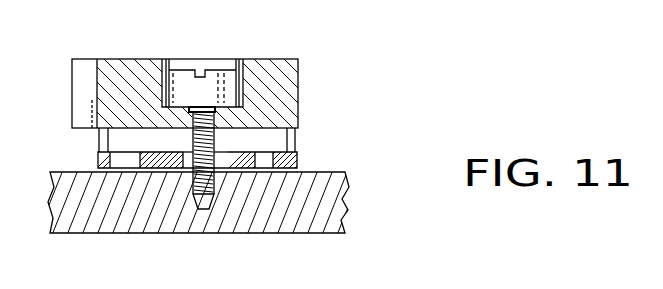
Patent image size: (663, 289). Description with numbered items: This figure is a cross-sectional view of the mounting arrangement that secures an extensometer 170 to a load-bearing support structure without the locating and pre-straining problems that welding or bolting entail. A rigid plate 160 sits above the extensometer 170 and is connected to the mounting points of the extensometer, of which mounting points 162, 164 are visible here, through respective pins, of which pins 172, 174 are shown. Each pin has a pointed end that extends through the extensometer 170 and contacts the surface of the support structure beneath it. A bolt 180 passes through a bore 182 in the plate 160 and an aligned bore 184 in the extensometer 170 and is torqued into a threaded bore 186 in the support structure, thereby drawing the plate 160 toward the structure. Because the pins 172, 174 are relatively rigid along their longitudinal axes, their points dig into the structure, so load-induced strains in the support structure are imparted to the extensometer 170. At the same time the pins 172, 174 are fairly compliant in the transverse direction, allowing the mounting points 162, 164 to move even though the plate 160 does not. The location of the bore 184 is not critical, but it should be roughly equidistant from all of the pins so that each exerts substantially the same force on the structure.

The rigid plate 160 is at (122, 61).
The mounting point 162 is at (102, 150).
The mounting point 164 is at (295, 150).
The extensometer 170 is at (155, 172).
The pin 172 is at (102, 140).
The pin 174 is at (296, 129).
The bolt 180 is at (223, 80).
The bore 182 is at (195, 109).
The bore 184 is at (220, 160).
The threaded bore 186 is at (216, 157).